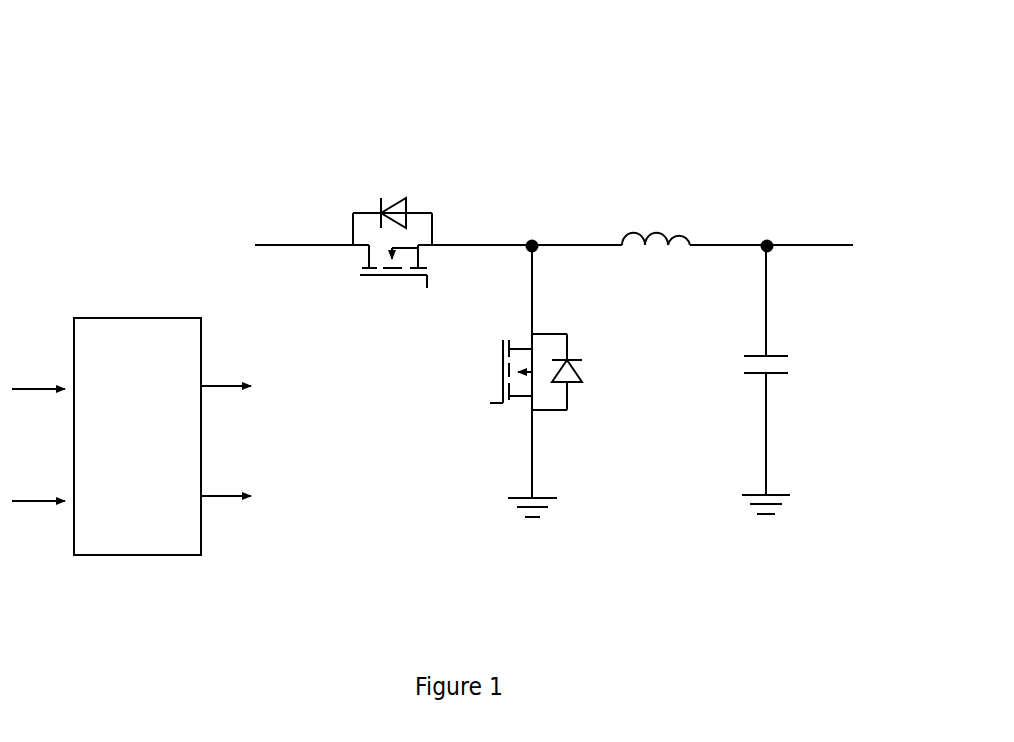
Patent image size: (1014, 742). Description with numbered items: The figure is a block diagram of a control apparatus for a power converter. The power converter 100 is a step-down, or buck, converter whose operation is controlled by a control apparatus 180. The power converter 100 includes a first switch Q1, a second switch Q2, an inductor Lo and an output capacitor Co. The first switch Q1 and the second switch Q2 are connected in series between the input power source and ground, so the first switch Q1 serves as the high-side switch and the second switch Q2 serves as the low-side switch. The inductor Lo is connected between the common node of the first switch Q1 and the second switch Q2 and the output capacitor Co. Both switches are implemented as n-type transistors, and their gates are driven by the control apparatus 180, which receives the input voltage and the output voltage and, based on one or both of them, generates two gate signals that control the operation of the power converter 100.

The power converter 100 is at (874, 68).
The control apparatus 180 is at (157, 449).
The first switch Q1 is at (377, 243).
The second switch Q2 is at (536, 381).
The inductor Lo is at (656, 224).
The output capacitor Co is at (781, 380).